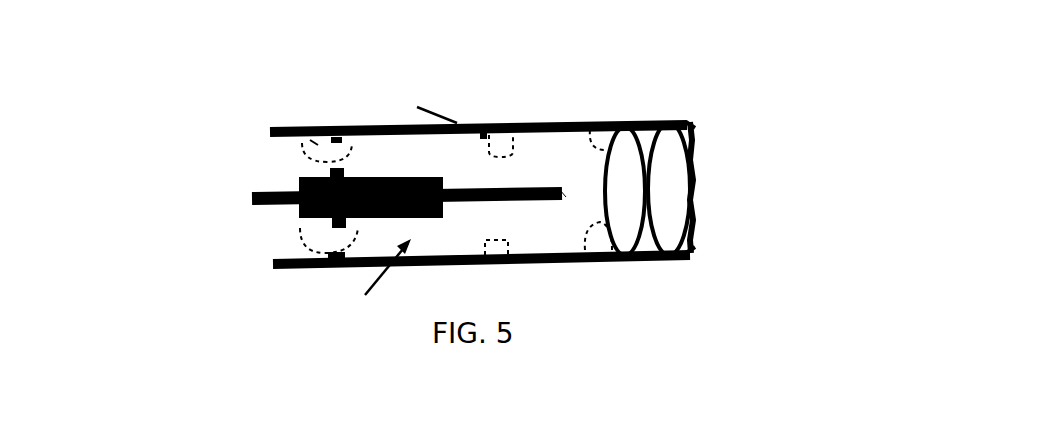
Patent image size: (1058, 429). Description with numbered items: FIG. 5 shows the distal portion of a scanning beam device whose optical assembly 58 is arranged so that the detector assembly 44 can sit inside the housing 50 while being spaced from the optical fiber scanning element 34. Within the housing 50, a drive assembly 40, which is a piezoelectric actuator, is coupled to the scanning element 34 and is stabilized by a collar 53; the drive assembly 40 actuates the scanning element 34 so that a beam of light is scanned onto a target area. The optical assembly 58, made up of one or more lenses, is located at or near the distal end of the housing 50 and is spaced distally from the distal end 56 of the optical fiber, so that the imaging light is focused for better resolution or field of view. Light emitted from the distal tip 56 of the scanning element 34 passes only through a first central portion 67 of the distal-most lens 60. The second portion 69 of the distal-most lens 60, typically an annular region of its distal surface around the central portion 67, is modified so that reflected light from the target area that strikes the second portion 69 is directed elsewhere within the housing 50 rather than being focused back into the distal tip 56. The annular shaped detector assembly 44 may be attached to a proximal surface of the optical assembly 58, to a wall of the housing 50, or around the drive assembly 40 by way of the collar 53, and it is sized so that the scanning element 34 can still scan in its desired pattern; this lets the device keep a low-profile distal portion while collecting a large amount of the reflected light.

The scanning element 34 is at (540, 200).
The drive assembly 40 is at (386, 177).
The detector assembly 44 is at (308, 127).
The housing 50 is at (548, 118).
The collar 53 is at (337, 127).
The distal end of the optical fiber 56 is at (566, 188).
The optical assembly 58 is at (622, 97).
The distal-most lens 60 is at (655, 260).
The first central portion 67 is at (697, 185).
The second portion 69 is at (693, 130).